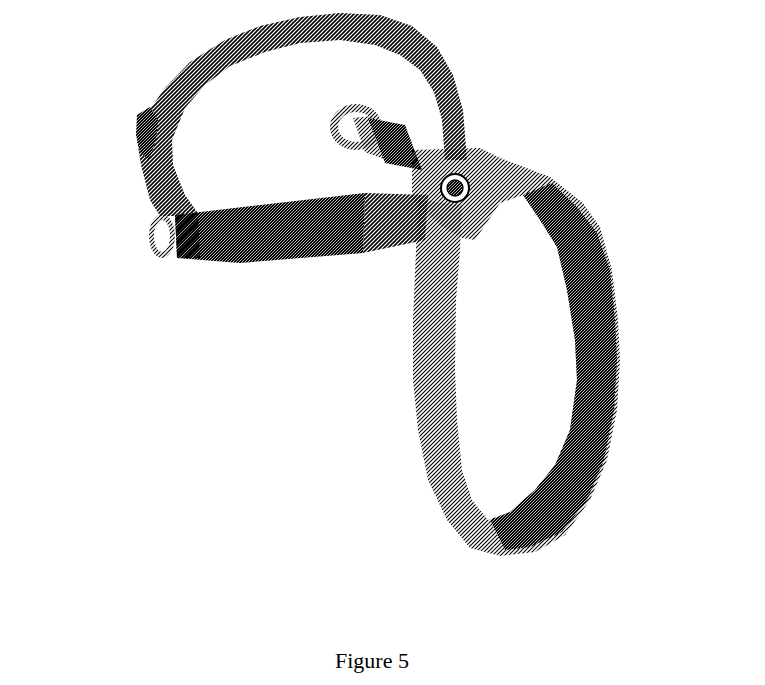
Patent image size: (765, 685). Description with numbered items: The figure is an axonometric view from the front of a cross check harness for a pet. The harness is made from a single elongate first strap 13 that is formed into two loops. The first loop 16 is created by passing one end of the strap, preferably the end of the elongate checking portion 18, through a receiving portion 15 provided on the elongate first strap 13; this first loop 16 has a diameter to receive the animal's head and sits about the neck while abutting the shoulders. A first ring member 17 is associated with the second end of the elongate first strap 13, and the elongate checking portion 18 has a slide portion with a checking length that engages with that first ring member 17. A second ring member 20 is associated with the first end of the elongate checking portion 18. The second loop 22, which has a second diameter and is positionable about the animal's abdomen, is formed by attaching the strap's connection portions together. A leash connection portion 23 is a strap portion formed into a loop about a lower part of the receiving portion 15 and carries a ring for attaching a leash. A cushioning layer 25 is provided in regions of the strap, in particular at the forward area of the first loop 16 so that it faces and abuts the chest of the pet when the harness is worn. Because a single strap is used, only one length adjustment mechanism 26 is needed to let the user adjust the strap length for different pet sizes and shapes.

The elongate first strap 13 is at (512, 178).
The receiving portion 15 is at (447, 170).
The first loop 16 is at (528, 318).
The first ring member 17 is at (185, 257).
The elongate checking portion 18 is at (277, 260).
The second ring member 20 is at (160, 252).
The second loop 22 is at (233, 115).
The leash connection portion 23 is at (430, 150).
The cushioning layer 25 is at (333, 115).
The length adjustment mechanism 26 is at (137, 133).